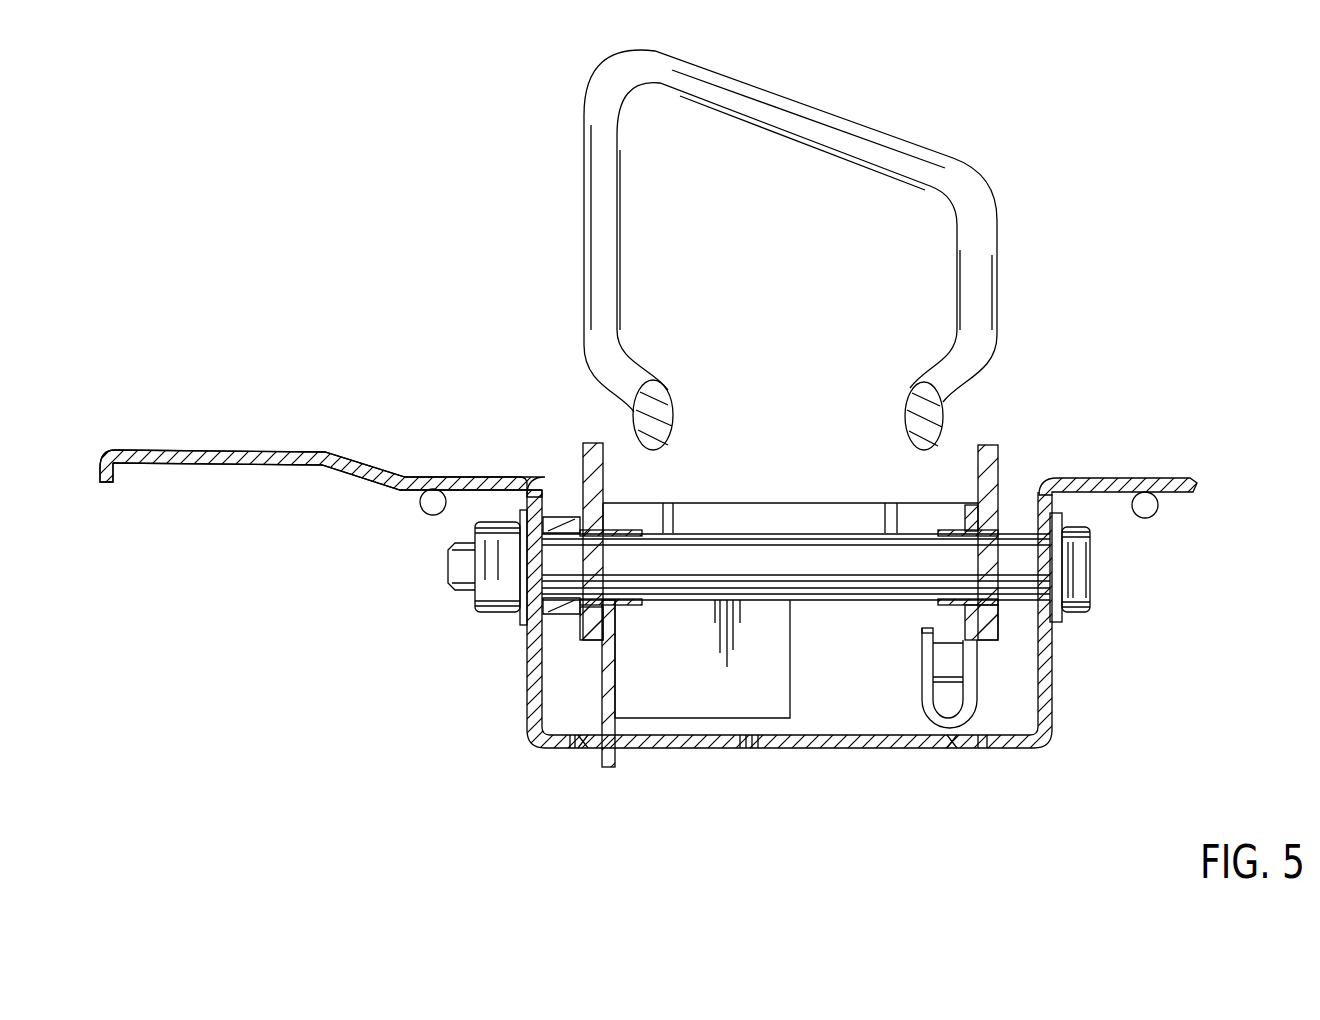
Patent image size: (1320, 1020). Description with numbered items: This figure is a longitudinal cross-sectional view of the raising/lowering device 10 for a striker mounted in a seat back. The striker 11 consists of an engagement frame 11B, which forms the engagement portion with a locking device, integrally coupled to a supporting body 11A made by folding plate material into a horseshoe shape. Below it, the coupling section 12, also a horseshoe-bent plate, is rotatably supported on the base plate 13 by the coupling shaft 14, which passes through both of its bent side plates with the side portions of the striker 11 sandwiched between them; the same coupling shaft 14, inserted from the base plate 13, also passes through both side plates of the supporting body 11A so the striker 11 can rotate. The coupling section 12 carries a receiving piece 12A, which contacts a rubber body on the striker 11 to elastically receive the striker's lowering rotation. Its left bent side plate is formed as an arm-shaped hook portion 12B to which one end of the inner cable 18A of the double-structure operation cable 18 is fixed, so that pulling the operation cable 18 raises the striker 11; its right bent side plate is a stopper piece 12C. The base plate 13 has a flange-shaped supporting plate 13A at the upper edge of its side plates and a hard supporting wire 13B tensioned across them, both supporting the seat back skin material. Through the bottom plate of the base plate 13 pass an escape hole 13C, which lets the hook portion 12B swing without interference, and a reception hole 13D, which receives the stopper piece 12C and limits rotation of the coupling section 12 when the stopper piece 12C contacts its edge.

The raising/lowering device 10 is at (1040, 161).
The striker 11 is at (982, 287).
The supporting body 11A is at (1002, 467).
The engagement frame 11B is at (842, 137).
The coupling section 12 is at (775, 520).
The receiving piece 12A is at (790, 679).
The hook portion 12B is at (930, 658).
The stopper piece 12C is at (615, 658).
The base plate 13 is at (812, 744).
The supporting plate 13A is at (485, 482).
The supporting wire 13B is at (433, 510).
The escape hole 13C is at (955, 748).
The reception hole 13D is at (583, 748).
The coupling shaft 14 is at (832, 568).
The operation cable 18 is at (1011, 678).
The inner cable 18A is at (947, 662).